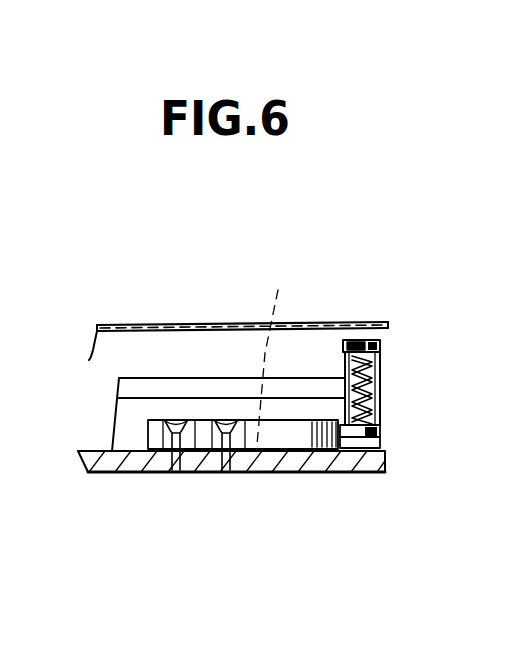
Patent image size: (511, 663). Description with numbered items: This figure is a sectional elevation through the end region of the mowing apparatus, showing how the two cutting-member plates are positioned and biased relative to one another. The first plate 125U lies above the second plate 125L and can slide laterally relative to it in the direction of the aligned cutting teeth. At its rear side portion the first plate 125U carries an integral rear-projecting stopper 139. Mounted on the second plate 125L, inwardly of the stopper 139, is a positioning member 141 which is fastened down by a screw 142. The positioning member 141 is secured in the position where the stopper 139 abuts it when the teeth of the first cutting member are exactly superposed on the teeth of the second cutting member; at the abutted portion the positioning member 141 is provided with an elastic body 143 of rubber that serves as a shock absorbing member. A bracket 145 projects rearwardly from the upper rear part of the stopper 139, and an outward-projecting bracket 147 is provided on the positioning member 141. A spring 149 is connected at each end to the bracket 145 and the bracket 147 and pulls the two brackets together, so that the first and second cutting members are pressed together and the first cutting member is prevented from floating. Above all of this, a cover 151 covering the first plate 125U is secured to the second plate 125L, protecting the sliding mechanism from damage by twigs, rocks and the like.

The cover 151 is at (121, 326).
The first plate 125U is at (142, 385).
The elastic body 143 is at (278, 290).
The bracket 145 is at (354, 341).
The spring 149 is at (379, 354).
The stopper 139 is at (381, 386).
The bracket 147 is at (382, 437).
The screw 142 is at (184, 470).
The positioning member 141 is at (283, 436).
The second plate 125L is at (350, 466).